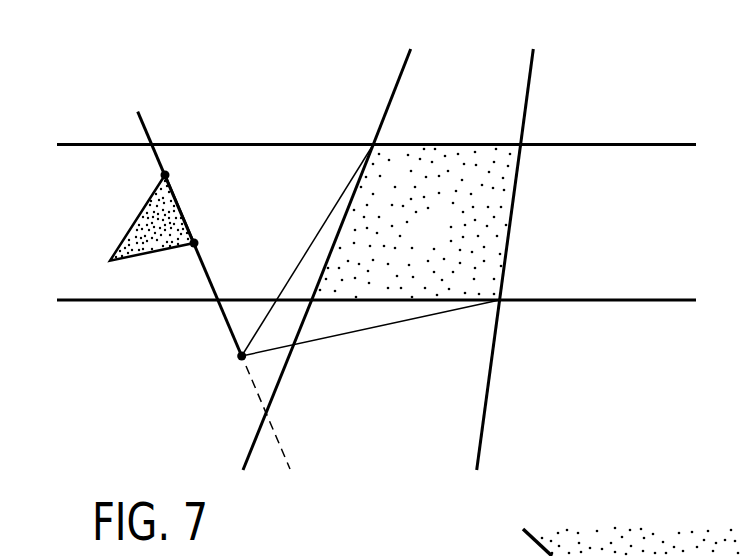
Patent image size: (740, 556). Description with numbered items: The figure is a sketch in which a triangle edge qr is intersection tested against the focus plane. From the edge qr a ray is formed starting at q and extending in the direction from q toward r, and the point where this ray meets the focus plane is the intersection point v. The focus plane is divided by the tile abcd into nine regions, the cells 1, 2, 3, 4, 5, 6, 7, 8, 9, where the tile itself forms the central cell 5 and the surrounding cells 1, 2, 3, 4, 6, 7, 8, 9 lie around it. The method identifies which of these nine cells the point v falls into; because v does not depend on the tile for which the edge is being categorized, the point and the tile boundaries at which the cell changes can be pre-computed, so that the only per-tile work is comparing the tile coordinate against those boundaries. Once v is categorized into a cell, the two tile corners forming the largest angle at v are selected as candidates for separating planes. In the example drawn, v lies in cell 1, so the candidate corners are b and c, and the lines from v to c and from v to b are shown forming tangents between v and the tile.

The cell 1 is at (184, 308).
The cell 2 is at (371, 385).
The cell 3 is at (598, 354).
The cell 4 is at (215, 234).
The cell 5 is at (420, 223).
The cell 6 is at (608, 194).
The cell 7 is at (369, 97).
The cell 8 is at (446, 113).
The cell 9 is at (562, 97).